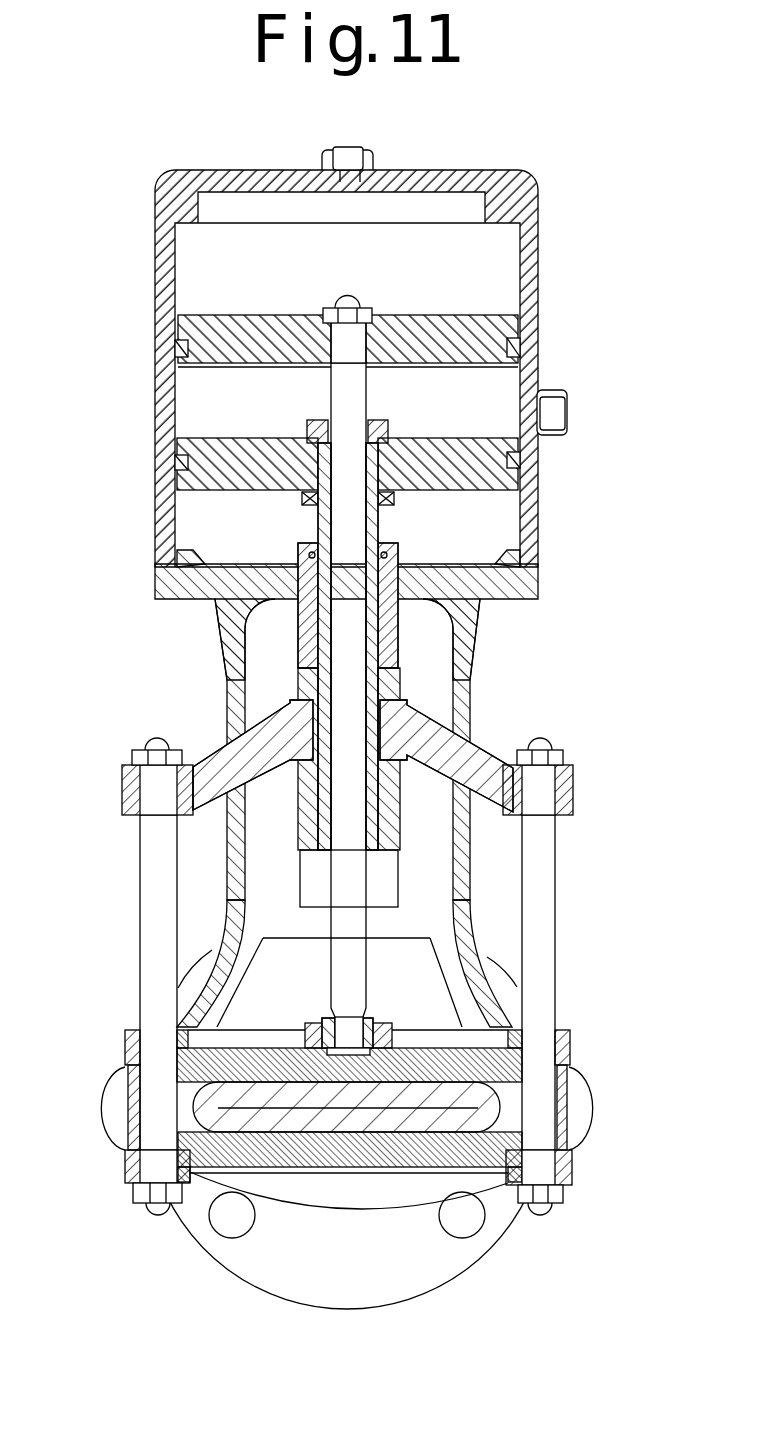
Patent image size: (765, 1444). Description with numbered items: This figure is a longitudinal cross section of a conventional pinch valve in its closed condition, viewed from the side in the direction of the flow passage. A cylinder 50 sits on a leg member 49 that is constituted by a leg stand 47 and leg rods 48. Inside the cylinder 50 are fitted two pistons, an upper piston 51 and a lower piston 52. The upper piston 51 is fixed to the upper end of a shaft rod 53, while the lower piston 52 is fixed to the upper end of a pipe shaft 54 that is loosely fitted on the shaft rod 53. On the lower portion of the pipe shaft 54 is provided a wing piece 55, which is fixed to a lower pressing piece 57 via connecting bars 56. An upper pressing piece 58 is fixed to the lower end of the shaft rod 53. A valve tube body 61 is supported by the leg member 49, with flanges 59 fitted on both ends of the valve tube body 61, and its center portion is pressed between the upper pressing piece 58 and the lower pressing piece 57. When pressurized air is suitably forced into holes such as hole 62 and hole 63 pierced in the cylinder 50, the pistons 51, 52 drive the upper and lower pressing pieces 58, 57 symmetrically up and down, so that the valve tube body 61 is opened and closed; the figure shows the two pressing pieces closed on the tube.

The leg stand 47 is at (197, 594).
The leg rods 48 is at (237, 842).
The leg member 49 is at (460, 718).
The cylinder 50 is at (525, 186).
The upper piston 51 is at (468, 330).
The lower piston 52 is at (493, 478).
The shaft rod 53 is at (353, 527).
The pipe shaft 54 is at (325, 528).
The wing piece 55 is at (397, 727).
The connecting bars 56 is at (152, 895).
The lower pressing piece 57 is at (233, 1148).
The upper pressing piece 58 is at (445, 1058).
The flanges 59 is at (292, 1260).
The valve tube body 61 is at (240, 1100).
The hole 62 is at (348, 152).
The hole 63 is at (566, 413).